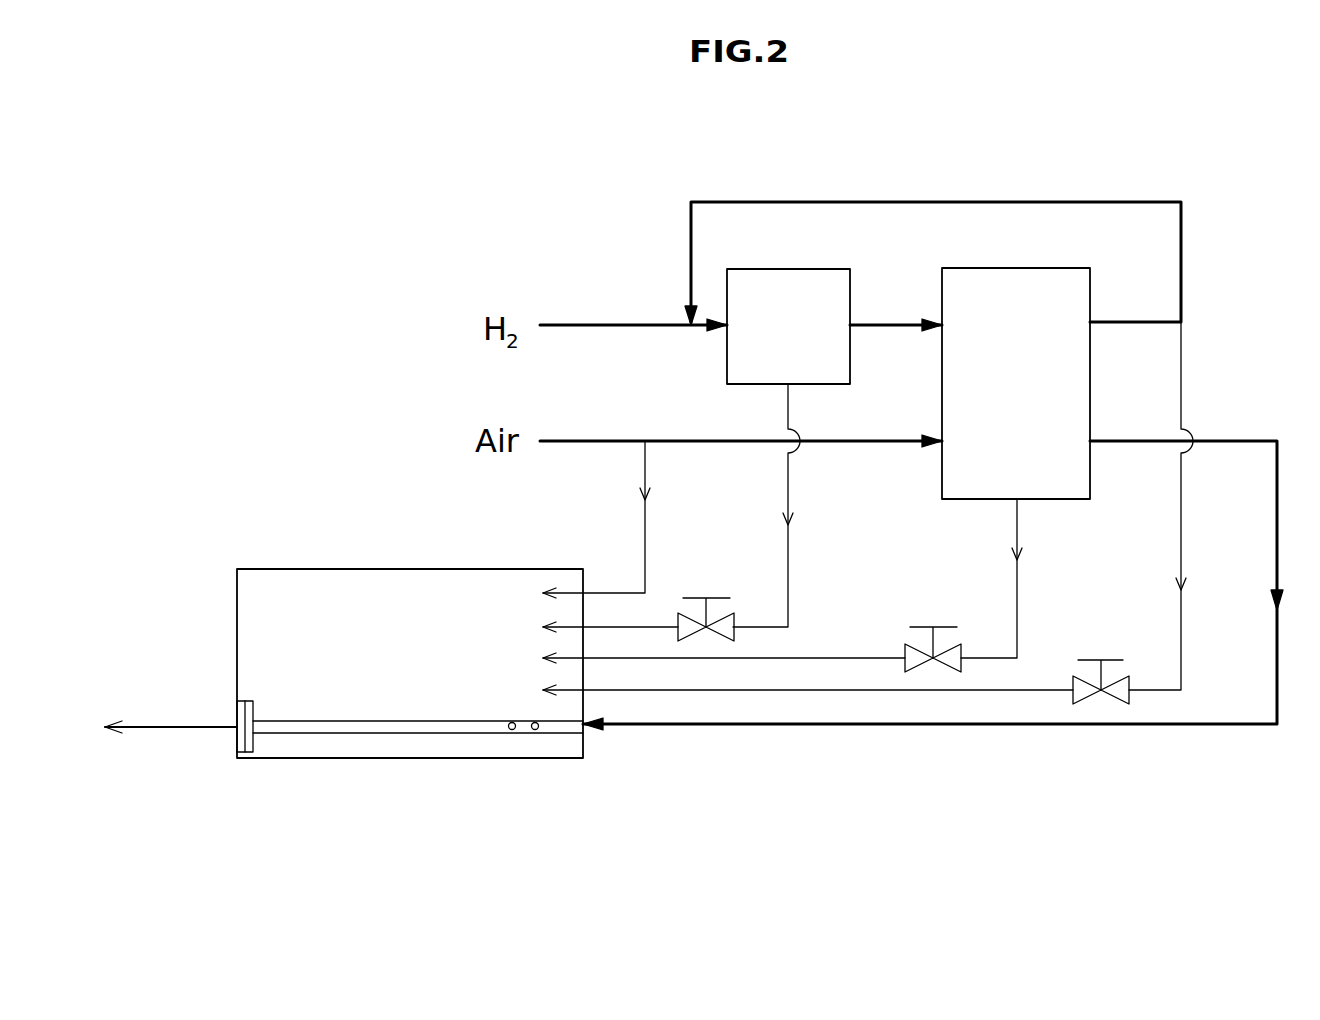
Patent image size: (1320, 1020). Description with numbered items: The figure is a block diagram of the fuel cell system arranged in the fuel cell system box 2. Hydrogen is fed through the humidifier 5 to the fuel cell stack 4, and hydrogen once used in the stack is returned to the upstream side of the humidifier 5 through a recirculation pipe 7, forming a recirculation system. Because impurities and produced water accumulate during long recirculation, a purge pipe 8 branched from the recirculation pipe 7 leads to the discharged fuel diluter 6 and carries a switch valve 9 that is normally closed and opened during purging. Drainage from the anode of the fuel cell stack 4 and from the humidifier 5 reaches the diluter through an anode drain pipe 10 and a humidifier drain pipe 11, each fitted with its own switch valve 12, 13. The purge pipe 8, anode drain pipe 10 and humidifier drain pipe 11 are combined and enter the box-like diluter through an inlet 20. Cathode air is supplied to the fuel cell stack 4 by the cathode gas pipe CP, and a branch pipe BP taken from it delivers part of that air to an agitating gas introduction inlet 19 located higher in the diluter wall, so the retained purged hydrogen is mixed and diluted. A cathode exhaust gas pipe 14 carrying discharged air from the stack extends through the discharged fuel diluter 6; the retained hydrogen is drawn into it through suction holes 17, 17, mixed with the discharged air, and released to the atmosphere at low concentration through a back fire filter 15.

The fuel cell system box 2 is at (372, 337).
The fuel cell stack 4 is at (1048, 268).
The humidifier 5 is at (807, 268).
The discharged fuel diluter 6 is at (328, 569).
The recirculation pipe 7 is at (1183, 258).
The purge pipe 8 is at (1017, 689).
The switch valve 9 is at (1110, 699).
The anode drain pipe 10 is at (800, 657).
The humidifier drain pipe 11 is at (650, 626).
The switch valve 12 is at (963, 653).
The switch valve 13 is at (735, 618).
The cathode exhaust gas pipe 14 is at (1275, 645).
The back fire filter 15 is at (237, 709).
The suction holes 17 is at (512, 730).
The agitating gas introduction inlet 19 is at (565, 593).
The inlet 20 is at (535, 697).
The cathode gas pipe CP is at (683, 441).
The branch pipe BP is at (647, 474).